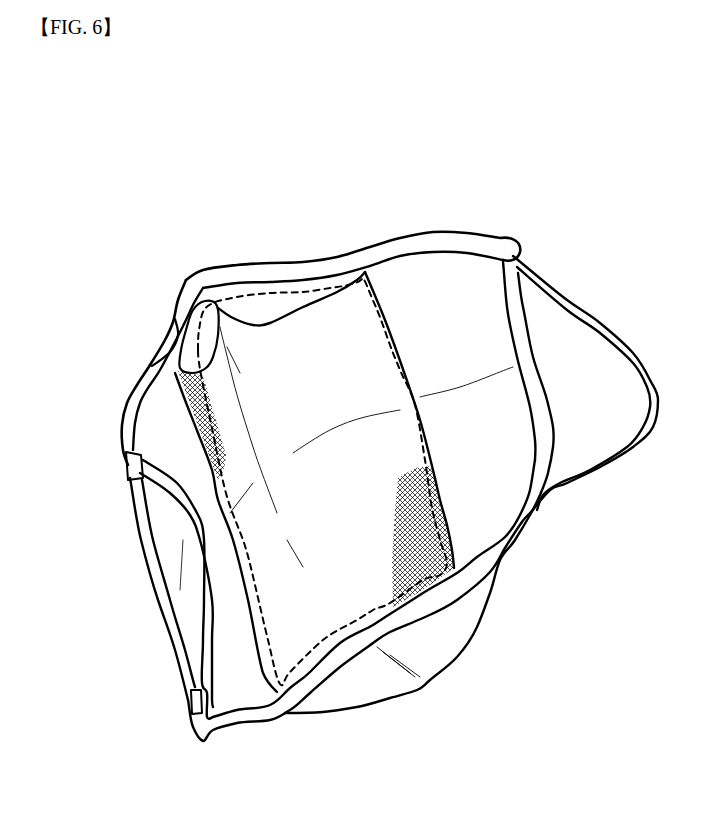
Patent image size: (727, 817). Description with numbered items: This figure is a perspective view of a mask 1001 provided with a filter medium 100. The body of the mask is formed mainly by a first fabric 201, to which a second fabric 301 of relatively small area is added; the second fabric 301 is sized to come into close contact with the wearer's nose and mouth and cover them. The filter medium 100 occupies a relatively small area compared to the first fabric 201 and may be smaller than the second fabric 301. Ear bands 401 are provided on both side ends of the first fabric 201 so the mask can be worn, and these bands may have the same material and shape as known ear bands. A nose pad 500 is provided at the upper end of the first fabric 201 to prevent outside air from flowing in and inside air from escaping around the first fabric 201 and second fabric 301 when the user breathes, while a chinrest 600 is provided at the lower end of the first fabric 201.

The mask 1001 is at (157, 175).
The filter medium 100 is at (210, 318).
The first fabric 201 is at (440, 276).
The second fabric 301 is at (345, 298).
The ear band 401 is at (597, 327).
The nose pad 500 is at (257, 307).
The chinrest 600 is at (467, 618).